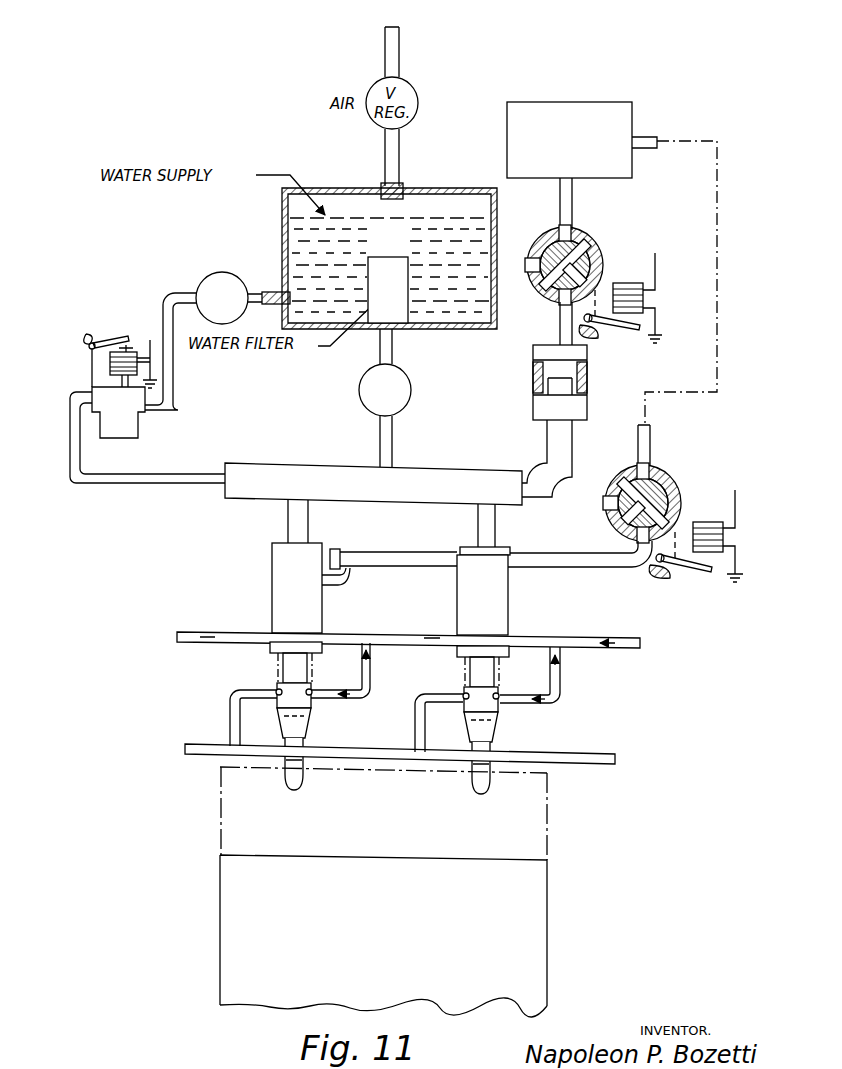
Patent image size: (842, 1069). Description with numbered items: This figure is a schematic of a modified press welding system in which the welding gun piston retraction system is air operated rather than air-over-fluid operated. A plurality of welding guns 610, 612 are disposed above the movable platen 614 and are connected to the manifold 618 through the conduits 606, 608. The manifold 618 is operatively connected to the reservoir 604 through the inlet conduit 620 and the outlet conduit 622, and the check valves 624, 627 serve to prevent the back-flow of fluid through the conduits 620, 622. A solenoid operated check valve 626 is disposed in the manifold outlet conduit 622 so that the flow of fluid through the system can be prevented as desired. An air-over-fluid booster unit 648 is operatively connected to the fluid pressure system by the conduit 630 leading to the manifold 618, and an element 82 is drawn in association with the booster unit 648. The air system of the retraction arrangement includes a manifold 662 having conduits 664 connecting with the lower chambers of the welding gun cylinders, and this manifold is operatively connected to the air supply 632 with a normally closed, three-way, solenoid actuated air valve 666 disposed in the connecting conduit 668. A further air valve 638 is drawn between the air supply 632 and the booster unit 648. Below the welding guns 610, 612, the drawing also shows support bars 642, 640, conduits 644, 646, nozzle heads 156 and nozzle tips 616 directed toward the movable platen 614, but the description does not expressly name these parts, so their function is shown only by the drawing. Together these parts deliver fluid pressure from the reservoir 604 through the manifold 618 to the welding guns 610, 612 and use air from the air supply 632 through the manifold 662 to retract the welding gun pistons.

The reservoir 604 is at (440, 205).
The air supply 632 is at (613, 116).
The check valve 627 is at (212, 285).
The solenoid operated check valve 626 is at (92, 395).
The outlet conduit 622 is at (137, 481).
The manifold 618 is at (300, 485).
The check valve 624 is at (400, 392).
The inlet conduit 620 is at (390, 438).
The air valve 638 is at (600, 240).
The filter element 82 is at (548, 375).
The air-over-fluid booster unit 648 is at (548, 410).
The conduit 630 is at (548, 494).
The connecting conduit 668 is at (647, 447).
The solenoid actuated air valve 666 is at (675, 492).
The manifold 662 is at (592, 568).
The conduit 606 is at (304, 518).
The conduit 608 is at (487, 520).
The welding gun 610 is at (273, 542).
The welding gun 612 is at (464, 545).
The conduits 664 is at (348, 580).
The support bar 642 is at (210, 636).
The support bar 640 is at (218, 750).
The air conduit 644 is at (371, 674).
The air conduit 646 is at (262, 690).
The nozzle head 156 is at (307, 725).
The nozzle tip 616 is at (294, 790).
The movable platen 614 is at (530, 880).